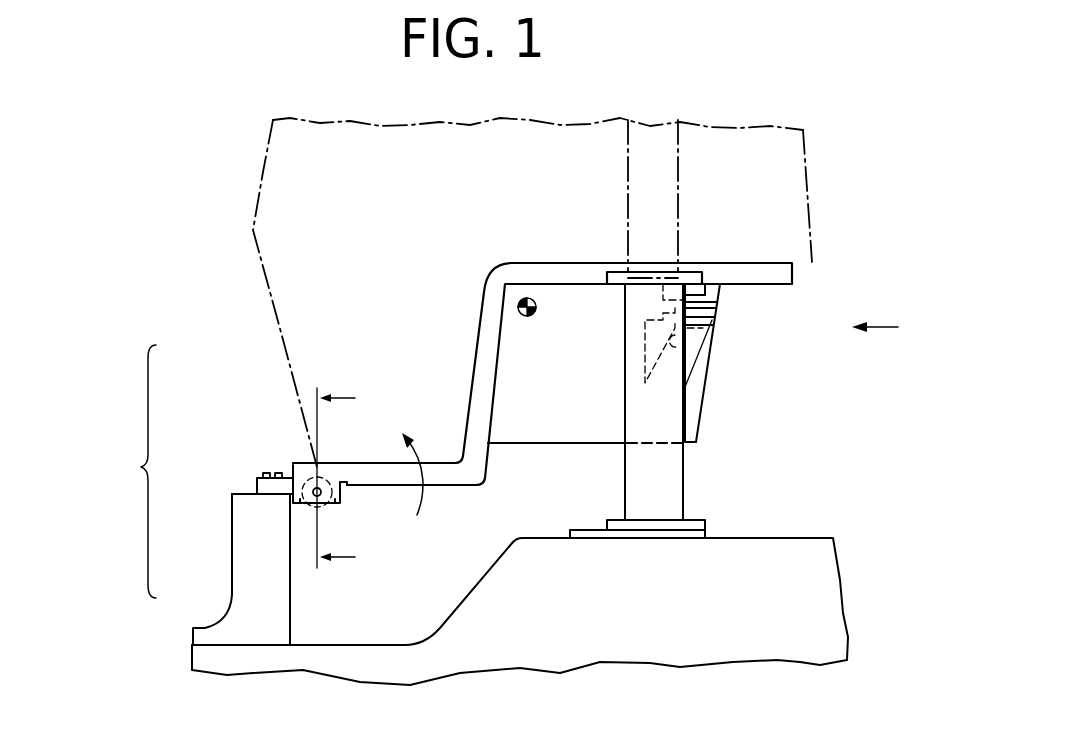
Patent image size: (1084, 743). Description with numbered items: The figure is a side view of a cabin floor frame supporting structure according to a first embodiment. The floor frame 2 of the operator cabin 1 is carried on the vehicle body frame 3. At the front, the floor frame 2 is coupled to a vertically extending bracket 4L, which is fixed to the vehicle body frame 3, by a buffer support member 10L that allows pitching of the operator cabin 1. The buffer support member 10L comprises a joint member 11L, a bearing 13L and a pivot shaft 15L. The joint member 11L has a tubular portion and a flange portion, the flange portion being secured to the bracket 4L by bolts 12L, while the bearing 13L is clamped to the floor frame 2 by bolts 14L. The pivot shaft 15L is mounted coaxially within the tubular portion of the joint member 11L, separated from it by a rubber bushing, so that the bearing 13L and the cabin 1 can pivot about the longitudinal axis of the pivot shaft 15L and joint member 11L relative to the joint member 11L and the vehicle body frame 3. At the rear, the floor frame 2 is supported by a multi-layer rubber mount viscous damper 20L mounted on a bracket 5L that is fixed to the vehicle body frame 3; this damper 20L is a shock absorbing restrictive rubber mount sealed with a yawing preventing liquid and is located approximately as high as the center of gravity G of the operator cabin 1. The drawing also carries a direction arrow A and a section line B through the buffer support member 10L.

The operator cabin 1 is at (285, 163).
The floor frame 2 is at (476, 372).
The vehicle body frame 3 is at (467, 647).
The bracket 4L is at (265, 625).
The bracket 5L is at (670, 472).
The buffer support member 10L is at (212, 471).
The joint member 11L is at (260, 487).
The bolts 12L is at (267, 477).
The bearing 13L is at (300, 497).
The bolts 14L is at (303, 500).
The pivot shaft 15L is at (322, 500).
The multi-layer rubber mount viscous damper 20L is at (698, 336).
The center of gravity G is at (521, 317).
The direction arrow A is at (887, 324).
The section line B- B is at (351, 478).